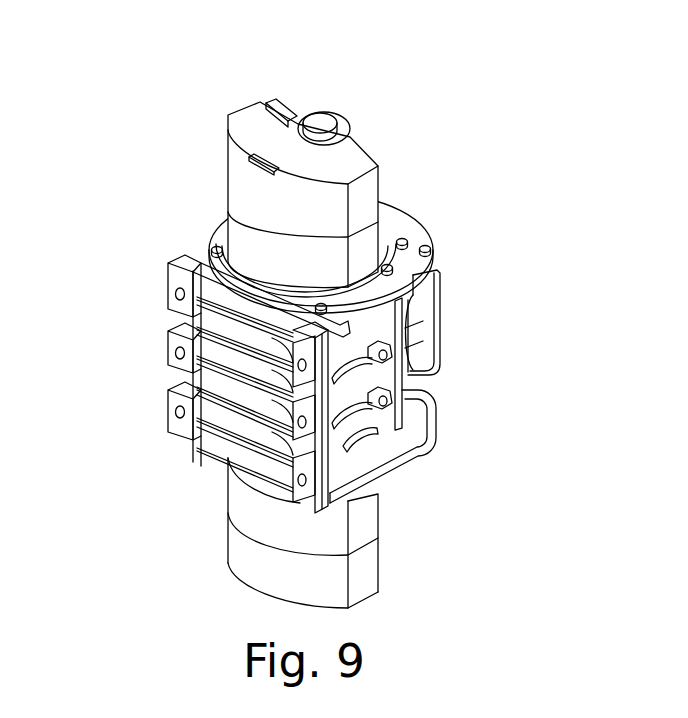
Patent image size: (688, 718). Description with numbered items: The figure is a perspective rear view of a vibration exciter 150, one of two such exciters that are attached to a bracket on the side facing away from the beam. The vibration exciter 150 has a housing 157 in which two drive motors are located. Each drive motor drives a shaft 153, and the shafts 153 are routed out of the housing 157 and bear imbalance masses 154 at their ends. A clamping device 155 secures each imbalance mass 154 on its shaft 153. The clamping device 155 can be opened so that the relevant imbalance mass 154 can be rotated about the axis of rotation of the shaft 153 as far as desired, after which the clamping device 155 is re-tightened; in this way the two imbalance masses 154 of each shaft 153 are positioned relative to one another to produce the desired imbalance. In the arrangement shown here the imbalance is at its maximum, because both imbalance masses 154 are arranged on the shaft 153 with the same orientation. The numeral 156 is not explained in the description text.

The vibration exciter 150 is at (470, 392).
The shaft 153 is at (320, 112).
The imbalance mass 154 is at (227, 165).
The clamping device 155 is at (285, 112).
The spring frame 156 is at (173, 412).
The housing 157 is at (410, 457).